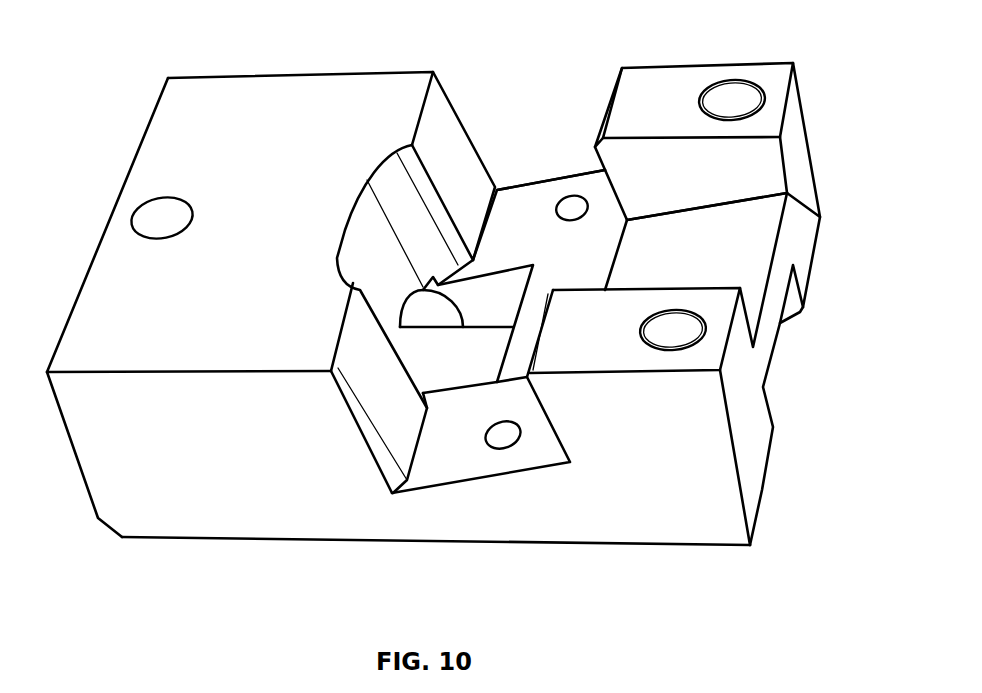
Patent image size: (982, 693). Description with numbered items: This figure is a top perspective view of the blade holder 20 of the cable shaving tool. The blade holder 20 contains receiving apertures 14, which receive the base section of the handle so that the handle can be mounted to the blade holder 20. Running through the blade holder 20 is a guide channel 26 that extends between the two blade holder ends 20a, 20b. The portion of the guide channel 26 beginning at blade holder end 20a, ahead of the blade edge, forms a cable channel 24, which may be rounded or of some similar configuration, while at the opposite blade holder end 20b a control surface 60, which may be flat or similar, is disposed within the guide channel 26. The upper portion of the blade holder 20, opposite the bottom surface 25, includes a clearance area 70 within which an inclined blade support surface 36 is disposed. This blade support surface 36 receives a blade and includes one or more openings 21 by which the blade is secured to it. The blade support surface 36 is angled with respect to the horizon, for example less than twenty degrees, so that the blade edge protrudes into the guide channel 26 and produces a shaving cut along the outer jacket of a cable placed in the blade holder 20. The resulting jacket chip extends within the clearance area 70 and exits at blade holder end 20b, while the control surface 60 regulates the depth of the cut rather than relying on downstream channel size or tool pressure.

The blade holder 20 is at (829, 148).
The blade holder end 20a is at (80, 477).
The blade holder end 20b is at (750, 443).
The receiving apertures 14 is at (152, 233).
The openings 21 is at (575, 200).
The cable channel 24 is at (437, 283).
The bottom surface 25 is at (617, 545).
The guide channel 26 is at (780, 328).
The blade support surface 36 is at (428, 462).
The control surface 60 is at (780, 350).
The clearance area 70 is at (503, 325).